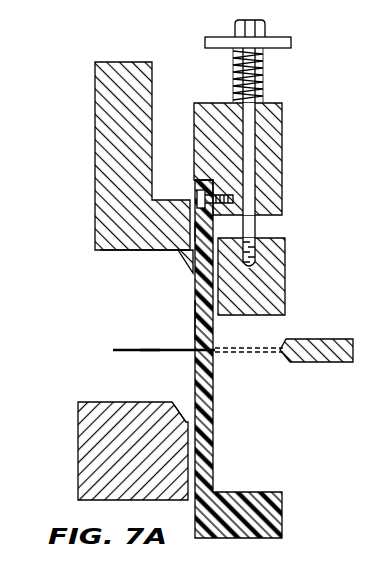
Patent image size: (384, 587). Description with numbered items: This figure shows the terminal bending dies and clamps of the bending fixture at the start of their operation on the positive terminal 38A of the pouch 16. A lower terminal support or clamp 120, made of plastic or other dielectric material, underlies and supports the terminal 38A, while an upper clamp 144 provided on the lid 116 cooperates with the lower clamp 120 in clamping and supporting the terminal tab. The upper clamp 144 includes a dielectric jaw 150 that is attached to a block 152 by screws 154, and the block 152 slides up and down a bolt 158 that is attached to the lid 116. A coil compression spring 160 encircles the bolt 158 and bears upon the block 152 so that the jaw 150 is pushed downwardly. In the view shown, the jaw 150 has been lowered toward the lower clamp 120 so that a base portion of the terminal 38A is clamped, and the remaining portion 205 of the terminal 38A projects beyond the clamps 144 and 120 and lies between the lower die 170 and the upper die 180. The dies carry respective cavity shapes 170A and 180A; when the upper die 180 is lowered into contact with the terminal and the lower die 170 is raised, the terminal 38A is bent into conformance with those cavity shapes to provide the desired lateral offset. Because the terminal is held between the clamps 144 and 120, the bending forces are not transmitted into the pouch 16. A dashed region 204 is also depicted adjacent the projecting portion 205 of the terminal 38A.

The pouch 16 is at (333, 339).
The positive terminal 38A is at (149, 348).
The lid 116 is at (273, 268).
The lower terminal support or clamp 120 is at (213, 453).
The upper clamp 144 is at (194, 232).
The jaw 150 is at (195, 318).
The block 152 is at (252, 135).
The screws 154 is at (192, 196).
The bolt 158 is at (268, 162).
The coil compression spring 160 is at (267, 82).
The lower die 170 is at (128, 450).
The cavity shape 170A is at (186, 407).
The upper die 180 is at (110, 137).
The cavity shape 180A is at (132, 250).
The slot 204 is at (262, 347).
The portion of the terminal 205 is at (152, 352).